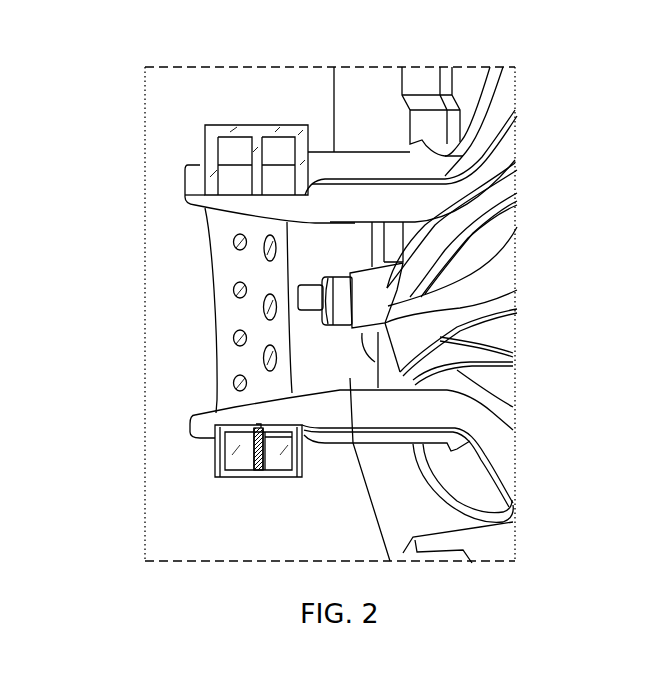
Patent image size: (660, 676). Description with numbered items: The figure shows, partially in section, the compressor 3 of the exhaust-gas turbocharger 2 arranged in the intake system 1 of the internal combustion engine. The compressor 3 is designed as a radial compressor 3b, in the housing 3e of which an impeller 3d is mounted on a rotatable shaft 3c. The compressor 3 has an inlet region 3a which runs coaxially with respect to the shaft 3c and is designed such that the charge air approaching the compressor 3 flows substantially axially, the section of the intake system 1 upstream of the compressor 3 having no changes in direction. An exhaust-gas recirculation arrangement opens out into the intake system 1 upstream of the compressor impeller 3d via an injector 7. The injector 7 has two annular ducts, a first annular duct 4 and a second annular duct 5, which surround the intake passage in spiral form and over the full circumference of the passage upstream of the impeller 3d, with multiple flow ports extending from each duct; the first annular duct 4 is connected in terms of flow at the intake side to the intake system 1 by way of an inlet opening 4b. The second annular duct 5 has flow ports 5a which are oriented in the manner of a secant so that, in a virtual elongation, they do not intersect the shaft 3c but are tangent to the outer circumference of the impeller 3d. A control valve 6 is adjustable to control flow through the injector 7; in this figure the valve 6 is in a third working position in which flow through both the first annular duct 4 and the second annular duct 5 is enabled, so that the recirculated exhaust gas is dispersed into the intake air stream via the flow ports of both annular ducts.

The intake system 1 is at (105, 324).
The exhaust-gas turbocharger 2 is at (524, 208).
The compressor 3 is at (453, 291).
The inlet region 3a is at (350, 380).
The radial compressor 3b is at (470, 152).
The shaft 3c is at (313, 300).
The impeller 3d is at (500, 308).
The housing 3e is at (512, 455).
The first annular duct 4 is at (232, 470).
The inlet opening 4b is at (236, 285).
The second annular duct 5 is at (276, 468).
The flow ports 5a is at (268, 258).
The control valve 6 is at (252, 468).
The injector 7 is at (300, 467).